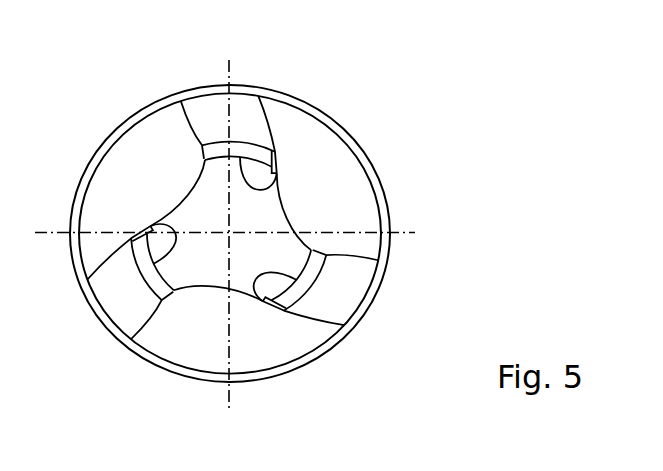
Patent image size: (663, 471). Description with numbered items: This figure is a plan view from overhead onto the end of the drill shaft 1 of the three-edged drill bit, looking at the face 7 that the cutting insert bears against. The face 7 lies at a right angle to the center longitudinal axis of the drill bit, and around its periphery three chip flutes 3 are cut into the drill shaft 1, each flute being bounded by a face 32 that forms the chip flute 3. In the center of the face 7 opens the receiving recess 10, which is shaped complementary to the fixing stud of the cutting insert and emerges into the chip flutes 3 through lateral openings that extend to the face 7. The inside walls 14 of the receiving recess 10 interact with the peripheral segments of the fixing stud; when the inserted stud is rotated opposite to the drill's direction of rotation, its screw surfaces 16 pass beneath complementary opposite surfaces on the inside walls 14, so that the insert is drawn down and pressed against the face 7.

The drill shaft 1 is at (284, 84).
The chip flutes 3 is at (287, 218).
The face 7 is at (215, 120).
The receiving recess 10 is at (240, 222).
The inside walls 14 is at (273, 175).
The screw surface 16 is at (272, 308).
The face that forms the chip flute 32 is at (190, 197).